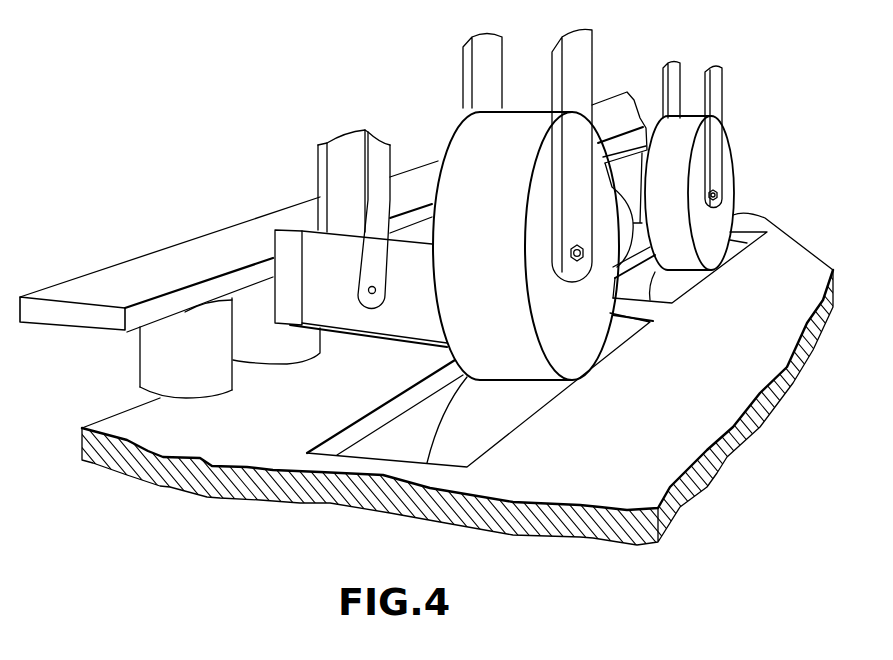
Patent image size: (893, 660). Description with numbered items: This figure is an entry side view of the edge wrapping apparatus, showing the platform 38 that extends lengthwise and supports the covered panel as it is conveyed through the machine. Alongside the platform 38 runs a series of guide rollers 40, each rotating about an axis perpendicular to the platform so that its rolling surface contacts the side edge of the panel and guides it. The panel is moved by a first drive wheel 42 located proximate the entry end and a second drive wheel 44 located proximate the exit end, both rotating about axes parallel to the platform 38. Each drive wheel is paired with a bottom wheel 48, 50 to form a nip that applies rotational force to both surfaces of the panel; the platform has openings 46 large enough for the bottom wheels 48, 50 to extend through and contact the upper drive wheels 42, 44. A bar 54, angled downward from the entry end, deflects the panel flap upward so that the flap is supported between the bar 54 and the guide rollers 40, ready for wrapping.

The platform 38 is at (700, 443).
The series of guide rollers 40 is at (152, 347).
The first drive wheel 42 is at (575, 338).
The second drive wheel 44 is at (722, 175).
The openings 46 is at (362, 453).
The bottom wheel 48 is at (502, 420).
The bottom wheel 50 is at (700, 300).
The bar 54 is at (313, 257).